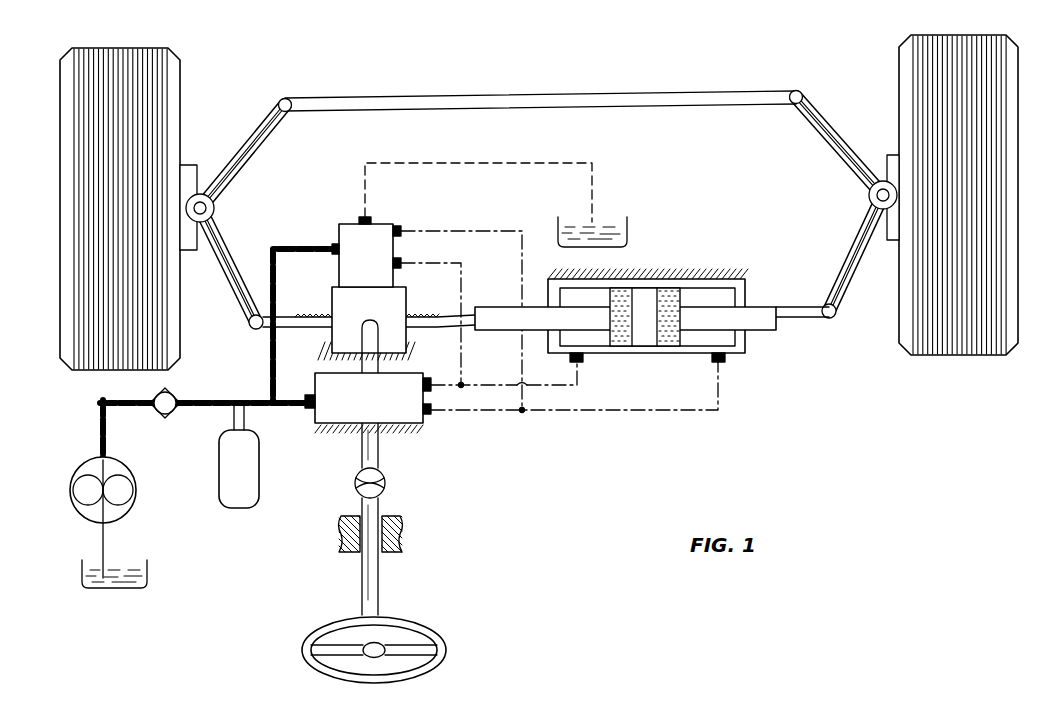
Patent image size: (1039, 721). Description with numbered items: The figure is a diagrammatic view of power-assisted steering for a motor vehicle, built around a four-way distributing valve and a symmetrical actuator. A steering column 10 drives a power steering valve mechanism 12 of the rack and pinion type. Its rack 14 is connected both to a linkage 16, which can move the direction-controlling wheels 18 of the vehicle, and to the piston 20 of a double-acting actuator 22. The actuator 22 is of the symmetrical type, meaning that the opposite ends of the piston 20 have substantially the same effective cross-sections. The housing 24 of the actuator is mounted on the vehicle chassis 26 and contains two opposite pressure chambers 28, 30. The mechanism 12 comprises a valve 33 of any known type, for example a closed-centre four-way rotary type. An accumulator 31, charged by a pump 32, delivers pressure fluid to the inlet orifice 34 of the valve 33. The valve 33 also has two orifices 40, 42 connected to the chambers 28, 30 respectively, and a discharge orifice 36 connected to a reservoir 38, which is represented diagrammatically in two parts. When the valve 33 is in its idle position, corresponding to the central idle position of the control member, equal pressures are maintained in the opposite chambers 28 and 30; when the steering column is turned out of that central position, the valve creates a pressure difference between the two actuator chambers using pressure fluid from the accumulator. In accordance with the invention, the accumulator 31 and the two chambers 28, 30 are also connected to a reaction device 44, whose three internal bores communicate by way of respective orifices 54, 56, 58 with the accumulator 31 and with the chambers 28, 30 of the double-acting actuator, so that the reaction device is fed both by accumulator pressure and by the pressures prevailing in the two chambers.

The steering column 10 is at (370, 592).
The power steering valve mechanism 12 is at (317, 347).
The rack 14 is at (420, 317).
The linkage 16 is at (381, 105).
The direction-controlling wheels 18 is at (140, 57).
The piston 20 is at (645, 335).
The double-acting actuator 22 is at (636, 313).
The housing 24 is at (745, 290).
The vehicle chassis 26 is at (710, 272).
The pressure chamber 28 is at (590, 338).
The pressure chamber 30 is at (708, 338).
The accumulator 31 is at (259, 498).
The pump 32 is at (135, 484).
The valve 33 is at (358, 270).
The inlet orifice 34 is at (333, 246).
The discharge orifice 36 is at (362, 217).
The reservoir 38 is at (147, 563).
The orifice 40 is at (401, 263).
The orifice 42 is at (401, 230).
The reaction device 44 is at (400, 410).
The orifice 54 is at (305, 410).
The orifice 56 is at (435, 379).
The orifice 58 is at (432, 412).